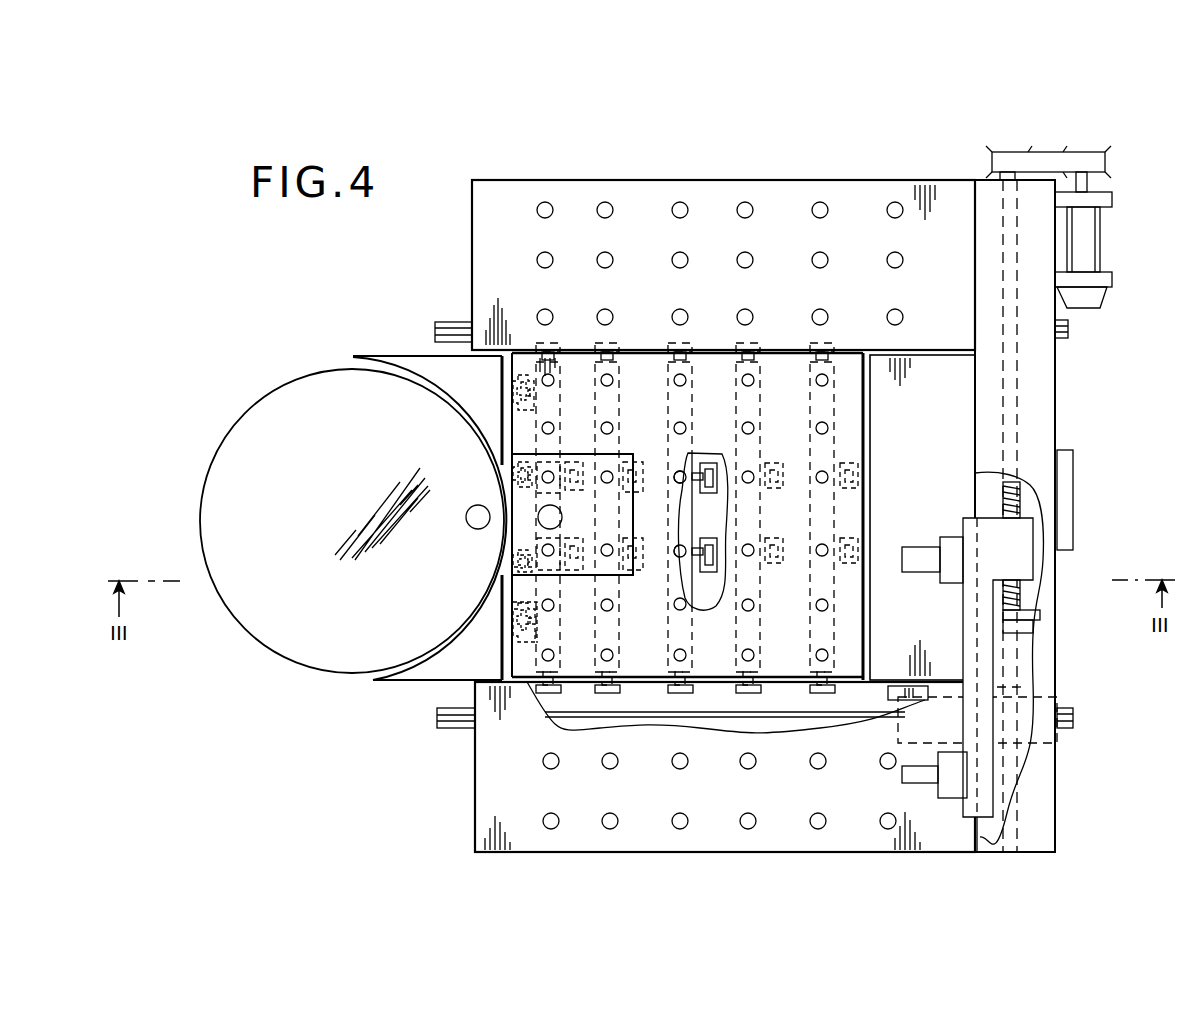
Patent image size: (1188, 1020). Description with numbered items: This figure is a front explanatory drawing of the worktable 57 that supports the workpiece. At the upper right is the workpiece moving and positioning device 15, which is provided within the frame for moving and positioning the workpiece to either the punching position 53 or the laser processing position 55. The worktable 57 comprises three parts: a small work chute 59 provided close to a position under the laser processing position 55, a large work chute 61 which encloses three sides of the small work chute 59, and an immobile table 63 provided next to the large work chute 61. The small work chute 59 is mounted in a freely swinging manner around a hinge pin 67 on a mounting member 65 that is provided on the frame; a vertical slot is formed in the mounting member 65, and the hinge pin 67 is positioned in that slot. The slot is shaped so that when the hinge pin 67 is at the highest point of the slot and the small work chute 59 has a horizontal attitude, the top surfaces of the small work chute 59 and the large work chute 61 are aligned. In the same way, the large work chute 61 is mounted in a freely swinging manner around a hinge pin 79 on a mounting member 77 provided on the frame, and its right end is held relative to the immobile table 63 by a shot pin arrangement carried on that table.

The workpiece moving and positioning device 15 is at (1004, 152).
The punching position 53 is at (466, 516).
The laser processing position 55 is at (540, 512).
The worktable 57 is at (638, 334).
The small work chute 59 is at (588, 456).
The large work chute 61 is at (717, 365).
The immobile table 63 is at (934, 460).
The mounting member 65 is at (513, 549).
The hinge pin 67 is at (513, 564).
The mounting member 77 is at (506, 636).
The hinge pin 79 is at (513, 612).